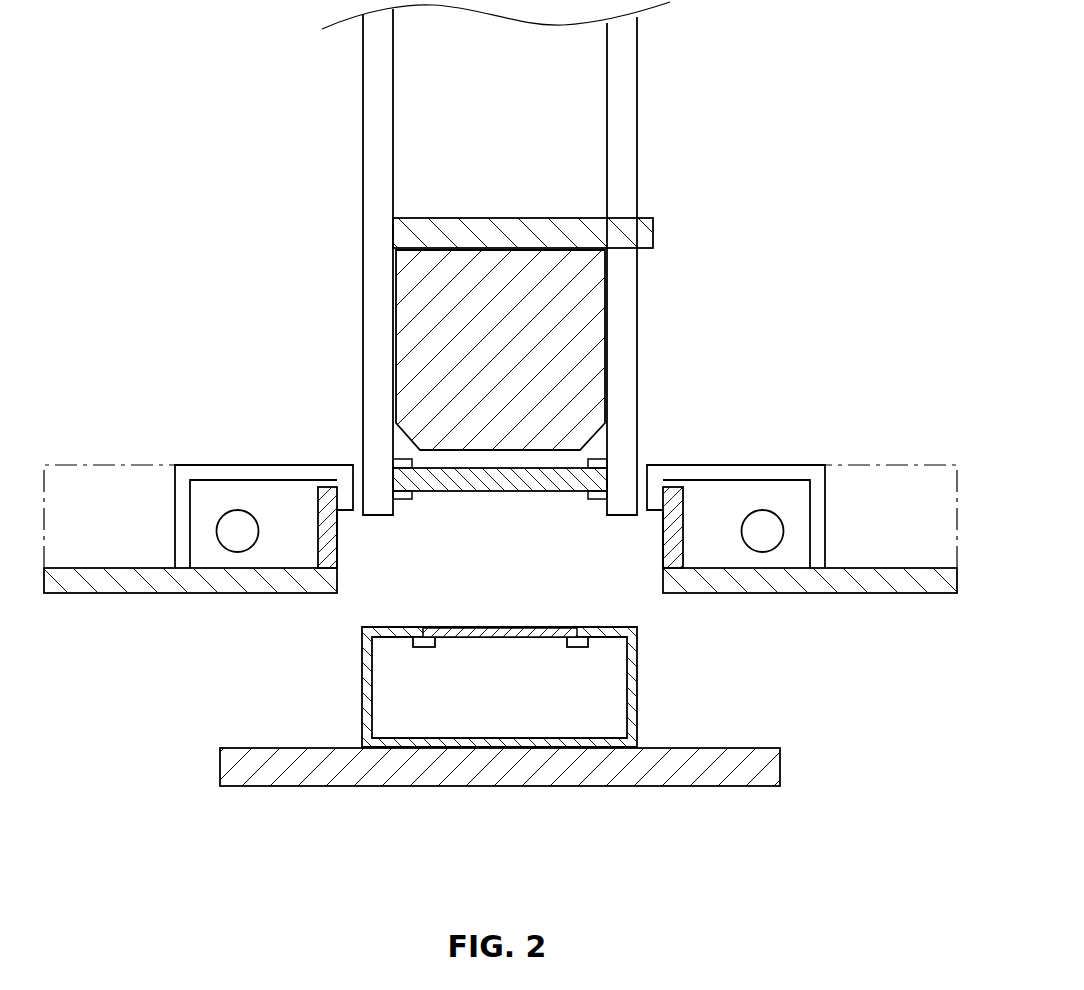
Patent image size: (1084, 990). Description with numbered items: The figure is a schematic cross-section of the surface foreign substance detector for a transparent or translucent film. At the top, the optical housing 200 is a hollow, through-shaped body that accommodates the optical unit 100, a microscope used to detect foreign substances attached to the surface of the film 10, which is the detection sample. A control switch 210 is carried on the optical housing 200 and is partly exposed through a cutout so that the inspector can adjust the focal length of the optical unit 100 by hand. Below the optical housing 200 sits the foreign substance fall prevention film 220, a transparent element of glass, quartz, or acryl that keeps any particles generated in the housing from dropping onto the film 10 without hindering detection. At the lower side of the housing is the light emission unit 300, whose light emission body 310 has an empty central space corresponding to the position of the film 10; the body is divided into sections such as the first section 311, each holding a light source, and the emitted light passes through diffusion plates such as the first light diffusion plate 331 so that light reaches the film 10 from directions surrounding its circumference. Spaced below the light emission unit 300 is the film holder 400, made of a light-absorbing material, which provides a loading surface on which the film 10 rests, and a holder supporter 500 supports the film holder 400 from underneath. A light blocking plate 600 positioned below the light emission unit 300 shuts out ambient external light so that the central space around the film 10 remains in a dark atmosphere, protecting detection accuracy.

The optical housing 200 is at (627, 88).
The control switch 210 is at (645, 233).
The optical unit 100 is at (593, 302).
The foreign substance fall prevention film 220 is at (498, 484).
The light emission unit 300 is at (256, 444).
The light emission body 310 is at (175, 493).
The first section 311 is at (238, 522).
The first light diffusion plate 331 is at (317, 478).
The light blocking plate 600 is at (870, 587).
The film holder 400 is at (633, 673).
The film 10 is at (492, 638).
The holder supporter 500 is at (615, 778).